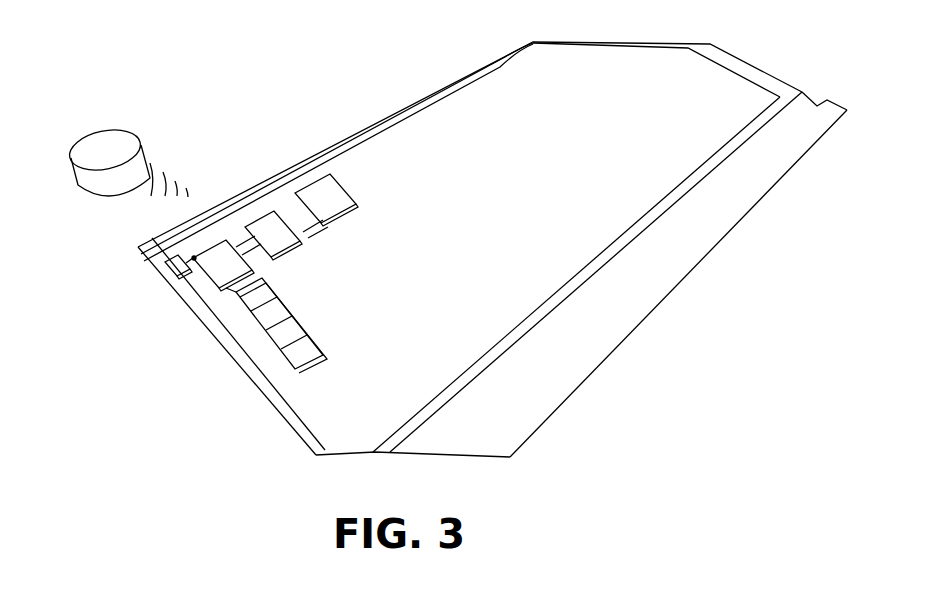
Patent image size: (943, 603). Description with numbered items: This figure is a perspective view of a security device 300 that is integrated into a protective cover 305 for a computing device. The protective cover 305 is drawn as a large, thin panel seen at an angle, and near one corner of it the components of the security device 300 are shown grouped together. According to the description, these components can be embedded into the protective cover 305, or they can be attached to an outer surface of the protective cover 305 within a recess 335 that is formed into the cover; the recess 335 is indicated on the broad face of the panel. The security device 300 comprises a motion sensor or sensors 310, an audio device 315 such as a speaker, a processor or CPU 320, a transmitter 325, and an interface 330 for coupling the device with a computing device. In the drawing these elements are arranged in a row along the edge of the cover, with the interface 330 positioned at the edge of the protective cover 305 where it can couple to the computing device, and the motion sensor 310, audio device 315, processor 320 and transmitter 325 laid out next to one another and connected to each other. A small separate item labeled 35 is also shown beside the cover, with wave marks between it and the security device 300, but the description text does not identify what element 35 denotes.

The wireless device / sensor 35 is at (107, 140).
The security device 300 is at (120, 283).
The protective cover 305 is at (682, 285).
The motion sensor 310 is at (300, 246).
The audio device 315 is at (243, 268).
The processor 320 is at (343, 206).
The transmitter 325 is at (299, 337).
The interface 330 is at (172, 292).
The recess 335 is at (447, 168).